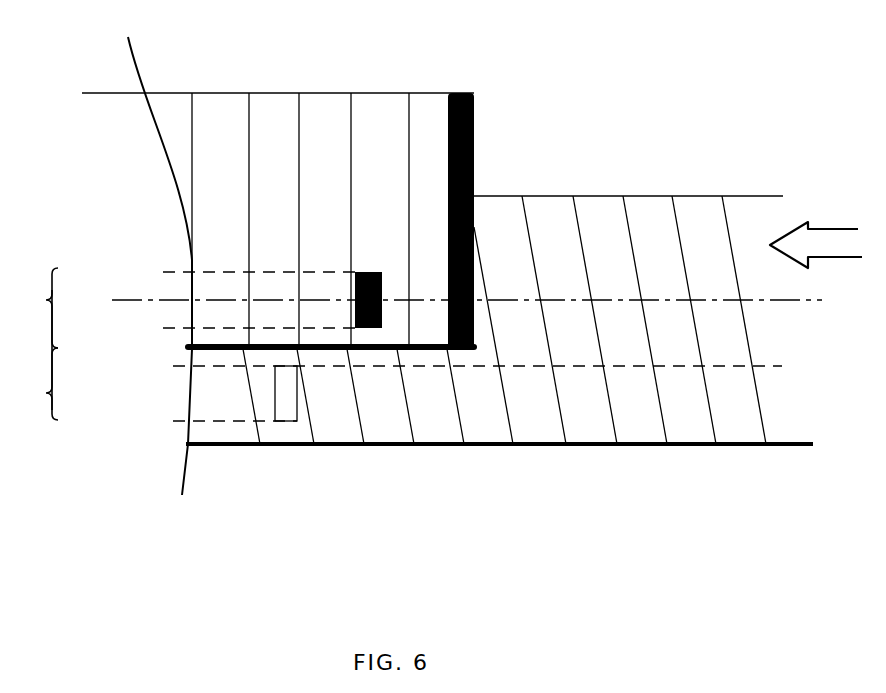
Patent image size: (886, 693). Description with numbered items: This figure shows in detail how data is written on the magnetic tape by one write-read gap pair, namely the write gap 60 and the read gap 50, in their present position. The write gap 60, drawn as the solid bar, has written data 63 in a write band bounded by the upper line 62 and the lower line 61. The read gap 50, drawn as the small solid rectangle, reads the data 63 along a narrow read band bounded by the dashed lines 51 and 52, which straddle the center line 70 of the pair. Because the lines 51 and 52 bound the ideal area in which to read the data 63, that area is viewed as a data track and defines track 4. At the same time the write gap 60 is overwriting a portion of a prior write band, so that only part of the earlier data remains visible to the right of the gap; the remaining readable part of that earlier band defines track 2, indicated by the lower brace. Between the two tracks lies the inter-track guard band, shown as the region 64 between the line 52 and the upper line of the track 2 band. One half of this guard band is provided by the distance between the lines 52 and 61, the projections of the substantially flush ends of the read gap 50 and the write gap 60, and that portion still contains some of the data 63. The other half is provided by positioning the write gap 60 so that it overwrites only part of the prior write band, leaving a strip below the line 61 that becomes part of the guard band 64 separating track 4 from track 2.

The line 62 is at (256, 91).
The data 63 is at (422, 107).
The write gap 60 is at (475, 165).
The read gap 50 is at (372, 272).
The line 51 is at (241, 272).
The center line 70 is at (451, 300).
The line 52 is at (242, 327).
The line 61 is at (190, 347).
The track 4 is at (43, 308).
The guard band 64 is at (36, 350).
The track 2 is at (43, 384).